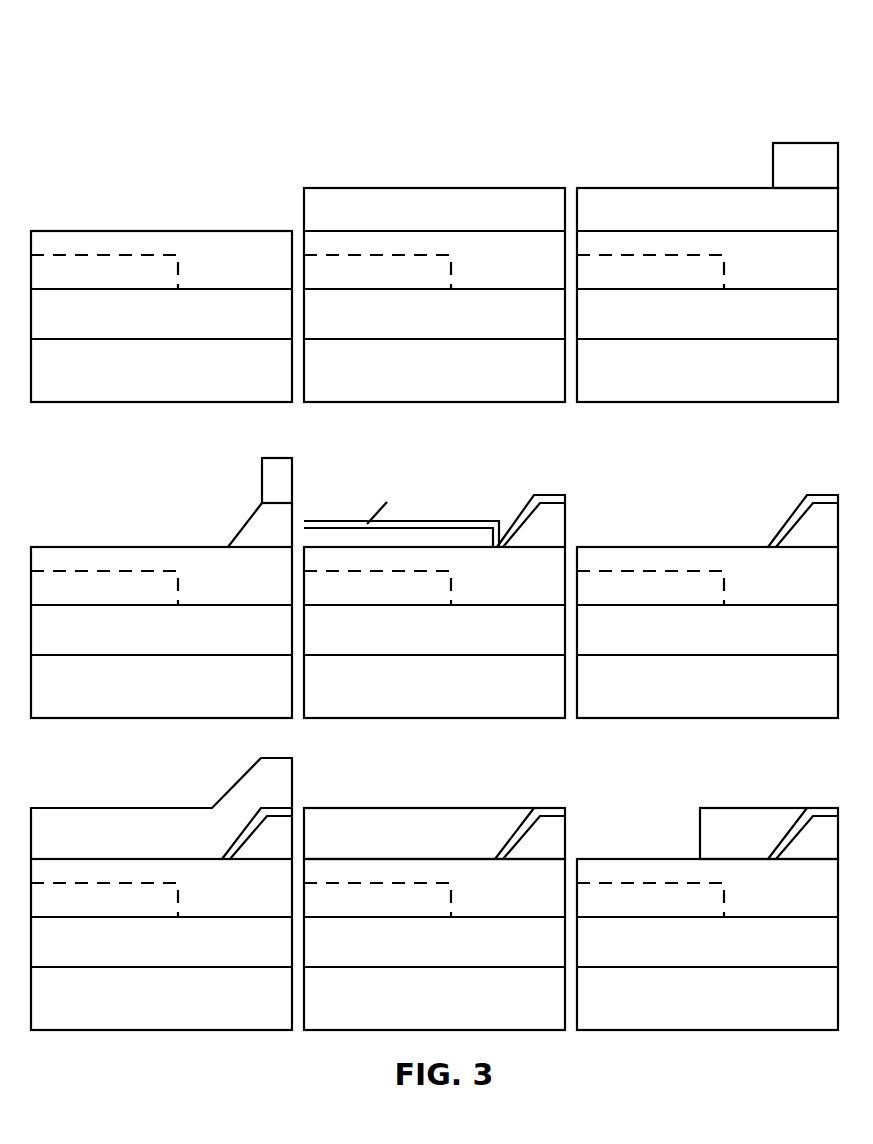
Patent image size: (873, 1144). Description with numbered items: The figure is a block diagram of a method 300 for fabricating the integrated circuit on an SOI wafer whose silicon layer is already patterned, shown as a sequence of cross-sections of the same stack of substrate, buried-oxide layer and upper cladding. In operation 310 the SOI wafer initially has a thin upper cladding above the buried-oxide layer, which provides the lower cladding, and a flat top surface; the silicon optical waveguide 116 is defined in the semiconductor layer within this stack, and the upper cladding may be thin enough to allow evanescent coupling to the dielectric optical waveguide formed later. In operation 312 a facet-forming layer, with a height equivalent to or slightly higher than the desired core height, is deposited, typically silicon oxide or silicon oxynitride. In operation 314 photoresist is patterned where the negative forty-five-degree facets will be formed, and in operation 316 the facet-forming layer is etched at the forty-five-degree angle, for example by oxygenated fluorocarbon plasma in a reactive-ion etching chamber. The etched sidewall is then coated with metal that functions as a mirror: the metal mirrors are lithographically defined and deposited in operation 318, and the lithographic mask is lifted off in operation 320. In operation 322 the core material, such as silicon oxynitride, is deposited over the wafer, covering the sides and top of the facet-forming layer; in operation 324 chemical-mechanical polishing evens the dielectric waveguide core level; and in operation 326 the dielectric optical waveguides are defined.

The method 300 is at (92, 31).
The optical waveguide 116 is at (53, 273).
The operation 310 is at (161, 253).
The operation 312 is at (434, 253).
The operation 314 is at (707, 253).
The operation 316 is at (161, 569).
The operation 318 is at (434, 569).
The operation 320 is at (707, 569).
The operation 322 is at (161, 881).
The operation 324 is at (434, 881).
The operation 326 is at (707, 881).